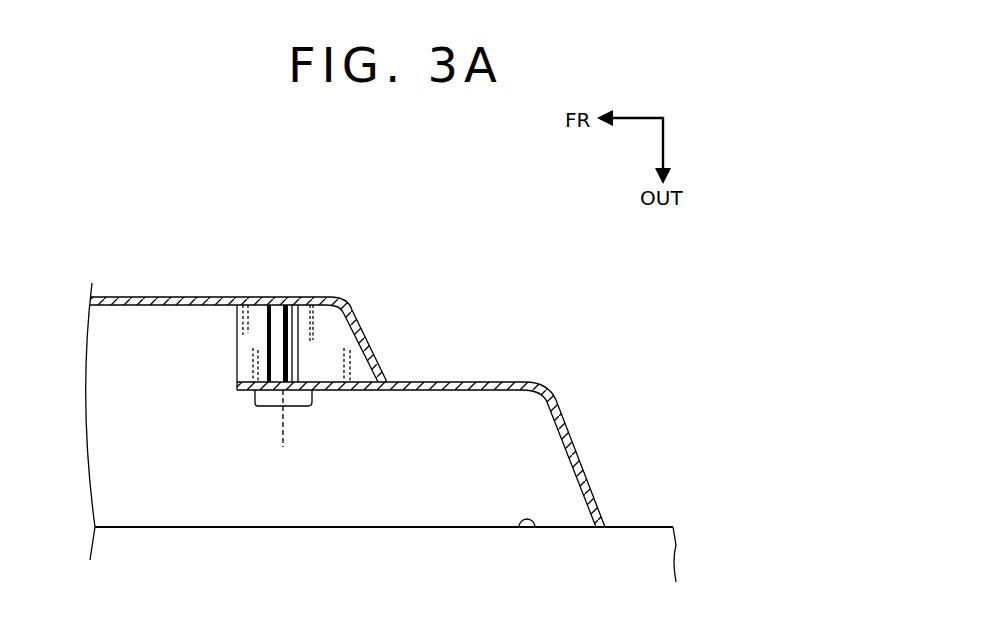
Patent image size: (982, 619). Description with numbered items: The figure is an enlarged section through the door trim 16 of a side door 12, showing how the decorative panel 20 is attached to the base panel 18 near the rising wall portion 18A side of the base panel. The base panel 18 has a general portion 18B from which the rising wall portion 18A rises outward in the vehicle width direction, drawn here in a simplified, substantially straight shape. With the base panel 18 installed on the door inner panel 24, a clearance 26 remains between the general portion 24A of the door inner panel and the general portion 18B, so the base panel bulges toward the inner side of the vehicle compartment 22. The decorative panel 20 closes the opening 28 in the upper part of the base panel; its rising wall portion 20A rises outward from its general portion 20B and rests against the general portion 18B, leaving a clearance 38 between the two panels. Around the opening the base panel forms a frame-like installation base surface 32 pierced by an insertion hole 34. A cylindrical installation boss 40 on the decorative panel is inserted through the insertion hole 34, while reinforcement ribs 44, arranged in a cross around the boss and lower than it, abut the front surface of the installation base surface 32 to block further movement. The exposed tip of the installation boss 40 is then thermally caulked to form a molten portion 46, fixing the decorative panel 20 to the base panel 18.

The side door 12 is at (629, 306).
The door trim 16 is at (528, 229).
The base panel 18 is at (454, 377).
The rising wall portion 18A is at (580, 455).
The general portion 18B is at (459, 380).
The decorative panel 20 is at (269, 305).
The rising wall portion 20A is at (365, 331).
The general portion 20B is at (157, 300).
The vehicle compartment 22 is at (254, 178).
The door inner panel 24 is at (643, 522).
The general portion 24A is at (531, 529).
The clearance 26 is at (460, 477).
The opening 28 is at (235, 385).
The installation base surface 32 is at (362, 392).
The insertion hole 34 is at (280, 433).
The clearance 38 is at (330, 334).
The installation boss 40 is at (272, 339).
The reinforcement ribs 44 is at (243, 331).
The molten portion 46 is at (258, 401).